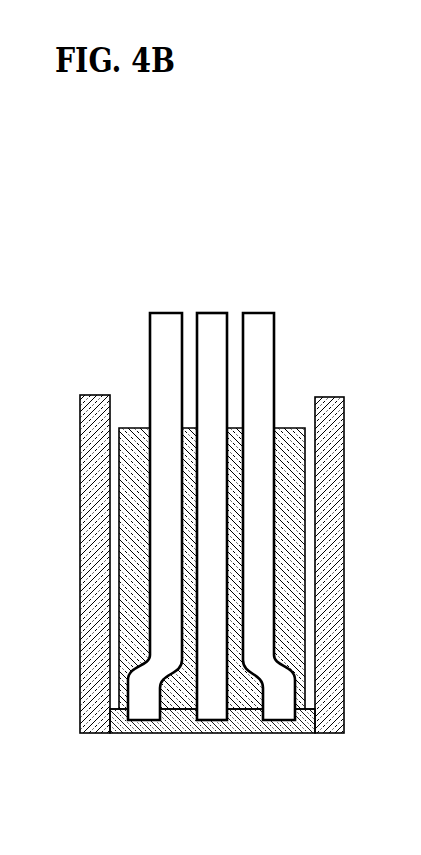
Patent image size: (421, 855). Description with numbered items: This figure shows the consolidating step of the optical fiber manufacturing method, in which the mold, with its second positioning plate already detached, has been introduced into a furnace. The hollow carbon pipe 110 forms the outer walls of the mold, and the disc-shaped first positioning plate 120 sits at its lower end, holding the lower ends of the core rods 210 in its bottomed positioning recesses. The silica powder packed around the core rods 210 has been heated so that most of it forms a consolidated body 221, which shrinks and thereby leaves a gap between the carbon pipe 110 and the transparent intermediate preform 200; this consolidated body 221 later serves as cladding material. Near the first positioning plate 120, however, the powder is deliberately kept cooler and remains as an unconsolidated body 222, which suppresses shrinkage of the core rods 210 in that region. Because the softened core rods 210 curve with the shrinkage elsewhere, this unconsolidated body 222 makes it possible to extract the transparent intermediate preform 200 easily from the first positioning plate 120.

The carbon pipe 110 is at (336, 557).
The first positioning plate 120 is at (245, 722).
The transparent intermediate preform 200 is at (252, 492).
The core rod 210 is at (167, 313).
The consolidated body 221 is at (295, 460).
The unconsolidated body 222 is at (252, 690).